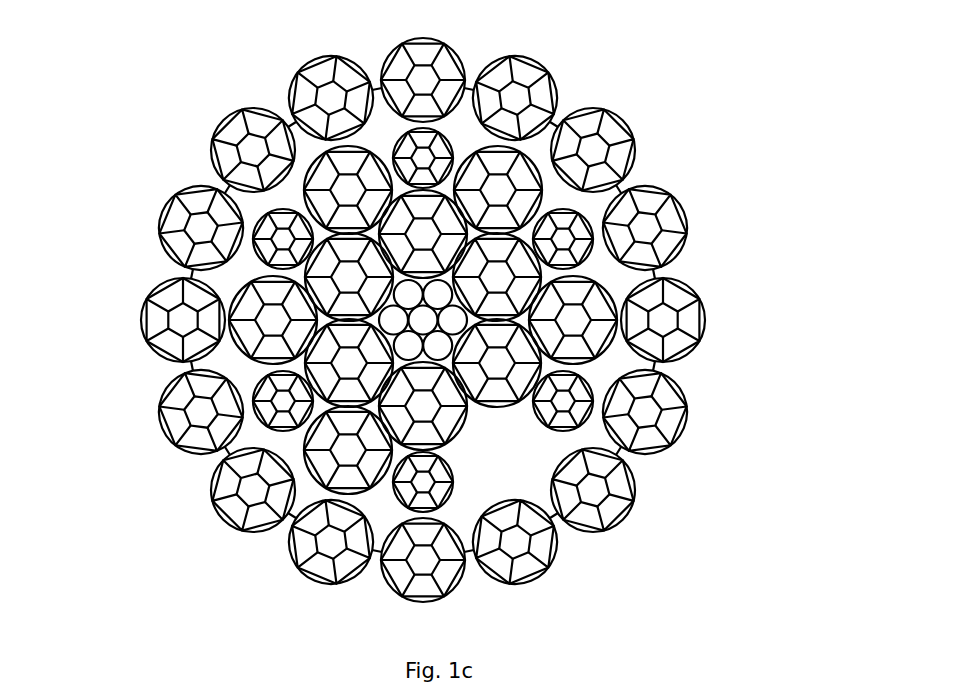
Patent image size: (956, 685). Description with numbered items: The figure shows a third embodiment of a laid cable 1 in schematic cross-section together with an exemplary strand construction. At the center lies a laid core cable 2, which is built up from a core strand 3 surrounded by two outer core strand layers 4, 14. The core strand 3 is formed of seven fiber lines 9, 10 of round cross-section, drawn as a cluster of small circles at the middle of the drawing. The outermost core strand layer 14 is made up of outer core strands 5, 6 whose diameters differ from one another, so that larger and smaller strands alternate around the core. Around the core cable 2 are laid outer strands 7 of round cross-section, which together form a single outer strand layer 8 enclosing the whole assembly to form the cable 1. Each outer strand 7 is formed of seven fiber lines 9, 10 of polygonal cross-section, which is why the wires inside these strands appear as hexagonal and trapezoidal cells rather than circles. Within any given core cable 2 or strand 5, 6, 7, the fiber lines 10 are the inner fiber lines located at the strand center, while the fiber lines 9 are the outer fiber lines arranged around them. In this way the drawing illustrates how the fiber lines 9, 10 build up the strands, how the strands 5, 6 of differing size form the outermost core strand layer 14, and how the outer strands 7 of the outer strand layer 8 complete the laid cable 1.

The laid cable 1 is at (93, 102).
The laid core cable 2 is at (458, 150).
The core strand 3 is at (577, 237).
The outer core strand layer 4 is at (637, 402).
The outer core strand 5 is at (535, 200).
The outer core strand 6 is at (450, 503).
The outer strand 7 is at (623, 122).
The outer strand layer 8 is at (280, 98).
The outer fiber line 9 is at (440, 217).
The inner fiber line 10 is at (422, 230).
The outermost core strand layer 14 is at (613, 285).